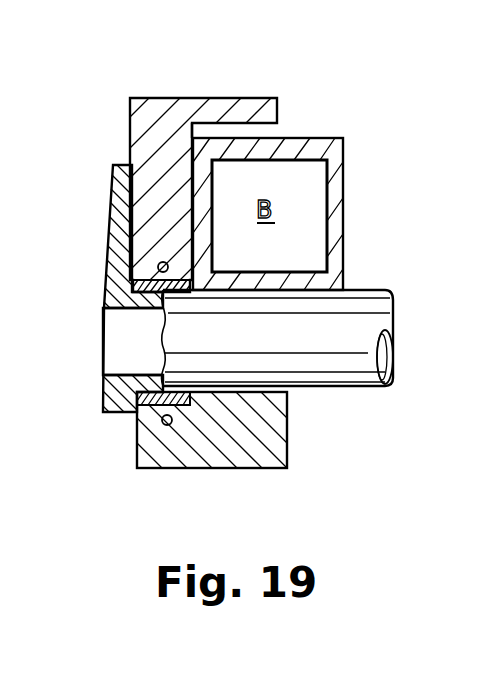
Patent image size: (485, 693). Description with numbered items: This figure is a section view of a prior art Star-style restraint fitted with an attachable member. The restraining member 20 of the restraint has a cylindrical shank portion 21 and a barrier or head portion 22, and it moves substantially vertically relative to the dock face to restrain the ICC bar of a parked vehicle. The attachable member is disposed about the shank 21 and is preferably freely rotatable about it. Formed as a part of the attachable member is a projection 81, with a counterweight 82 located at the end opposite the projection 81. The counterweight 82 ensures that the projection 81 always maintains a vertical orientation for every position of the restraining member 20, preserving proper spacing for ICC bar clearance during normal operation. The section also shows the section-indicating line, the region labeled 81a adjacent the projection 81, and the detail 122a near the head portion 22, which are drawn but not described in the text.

The restraining member 20 is at (162, 88).
The shank portion 21 is at (345, 317).
The head portion 22 is at (118, 216).
The projection 81 is at (242, 103).
The holder portion 81a is at (203, 131).
The counterweight 82 is at (278, 423).
The notch 122a is at (194, 133).